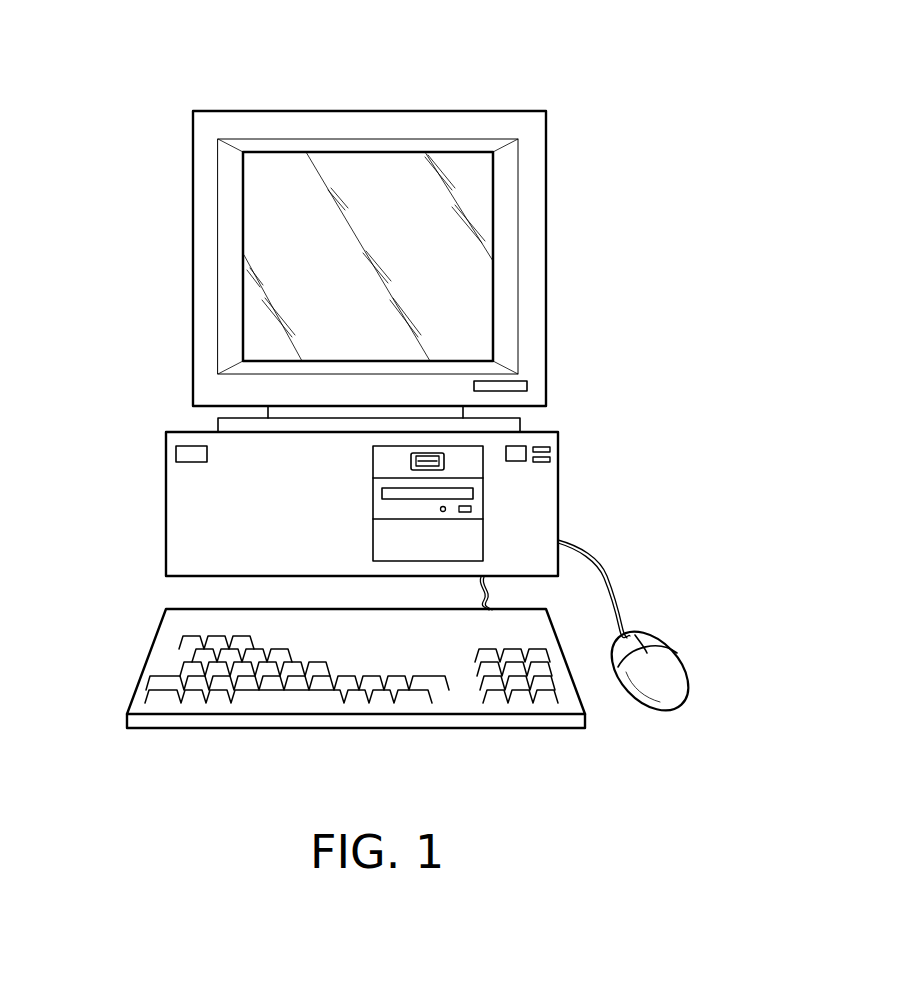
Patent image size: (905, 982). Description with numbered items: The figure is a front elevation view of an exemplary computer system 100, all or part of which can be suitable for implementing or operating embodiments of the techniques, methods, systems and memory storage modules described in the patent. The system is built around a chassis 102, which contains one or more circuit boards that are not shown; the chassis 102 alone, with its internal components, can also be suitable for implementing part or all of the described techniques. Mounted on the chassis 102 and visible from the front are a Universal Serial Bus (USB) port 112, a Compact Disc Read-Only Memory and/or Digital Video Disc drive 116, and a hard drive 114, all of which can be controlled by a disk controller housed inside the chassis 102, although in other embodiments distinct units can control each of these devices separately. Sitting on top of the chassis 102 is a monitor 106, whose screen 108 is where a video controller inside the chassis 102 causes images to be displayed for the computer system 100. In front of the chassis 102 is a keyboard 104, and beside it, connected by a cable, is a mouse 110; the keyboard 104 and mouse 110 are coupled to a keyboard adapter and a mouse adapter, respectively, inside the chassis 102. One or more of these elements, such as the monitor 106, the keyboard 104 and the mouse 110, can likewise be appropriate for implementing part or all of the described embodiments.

The computer system 100 is at (545, 77).
The chassis 102 is at (166, 506).
The keyboard 104 is at (147, 658).
The monitor 106 is at (263, 110).
The screen 108 is at (293, 261).
The mouse 110 is at (670, 663).
The Universal Serial Bus (USB) port 112 is at (447, 457).
The hard drive 114 is at (475, 538).
The Compact Disc Read-Only Memory (CD-ROM) and/or Digital Video Disc (DVD) drive 116 is at (475, 500).